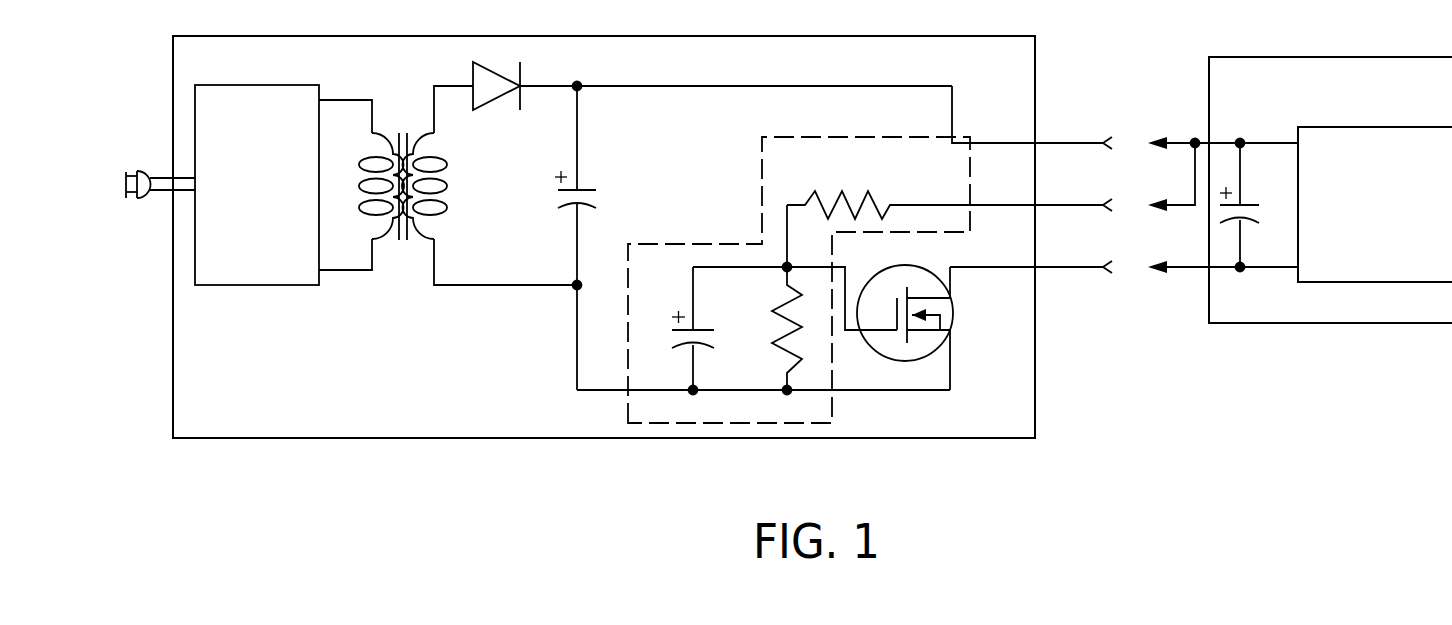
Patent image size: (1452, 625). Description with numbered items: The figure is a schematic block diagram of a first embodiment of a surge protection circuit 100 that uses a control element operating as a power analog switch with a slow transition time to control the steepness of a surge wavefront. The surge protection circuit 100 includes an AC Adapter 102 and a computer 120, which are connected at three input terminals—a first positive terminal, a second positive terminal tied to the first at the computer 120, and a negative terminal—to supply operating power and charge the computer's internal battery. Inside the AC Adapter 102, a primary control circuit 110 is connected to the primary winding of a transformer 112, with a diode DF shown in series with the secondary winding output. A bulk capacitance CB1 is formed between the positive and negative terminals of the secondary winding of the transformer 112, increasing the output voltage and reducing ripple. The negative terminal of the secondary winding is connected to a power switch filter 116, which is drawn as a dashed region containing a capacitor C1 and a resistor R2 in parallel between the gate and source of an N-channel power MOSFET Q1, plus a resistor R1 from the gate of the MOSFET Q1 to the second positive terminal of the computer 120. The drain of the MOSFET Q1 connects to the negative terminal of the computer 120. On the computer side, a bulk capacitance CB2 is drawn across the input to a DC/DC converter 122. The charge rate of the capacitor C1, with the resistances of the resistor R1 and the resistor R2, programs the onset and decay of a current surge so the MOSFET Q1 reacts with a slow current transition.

The surge protection circuit 100 is at (789, 243).
The AC Adapter 102 is at (277, 424).
The primary control circuit 110 is at (276, 224).
The transformer 112 is at (407, 104).
The power switch filter 116 is at (808, 137).
The computer 120 is at (1390, 122).
The DC/DC converter 122 is at (1375, 204).
The diode DF is at (496, 104).
The bulk capacitance CB1 is at (596, 194).
The resistor R1 is at (850, 194).
The resistor R2 is at (770, 337).
The capacitor C1 is at (681, 340).
The N-channel power MOSFET Q1 is at (953, 313).
The bulk capacitor CB2 is at (1258, 208).